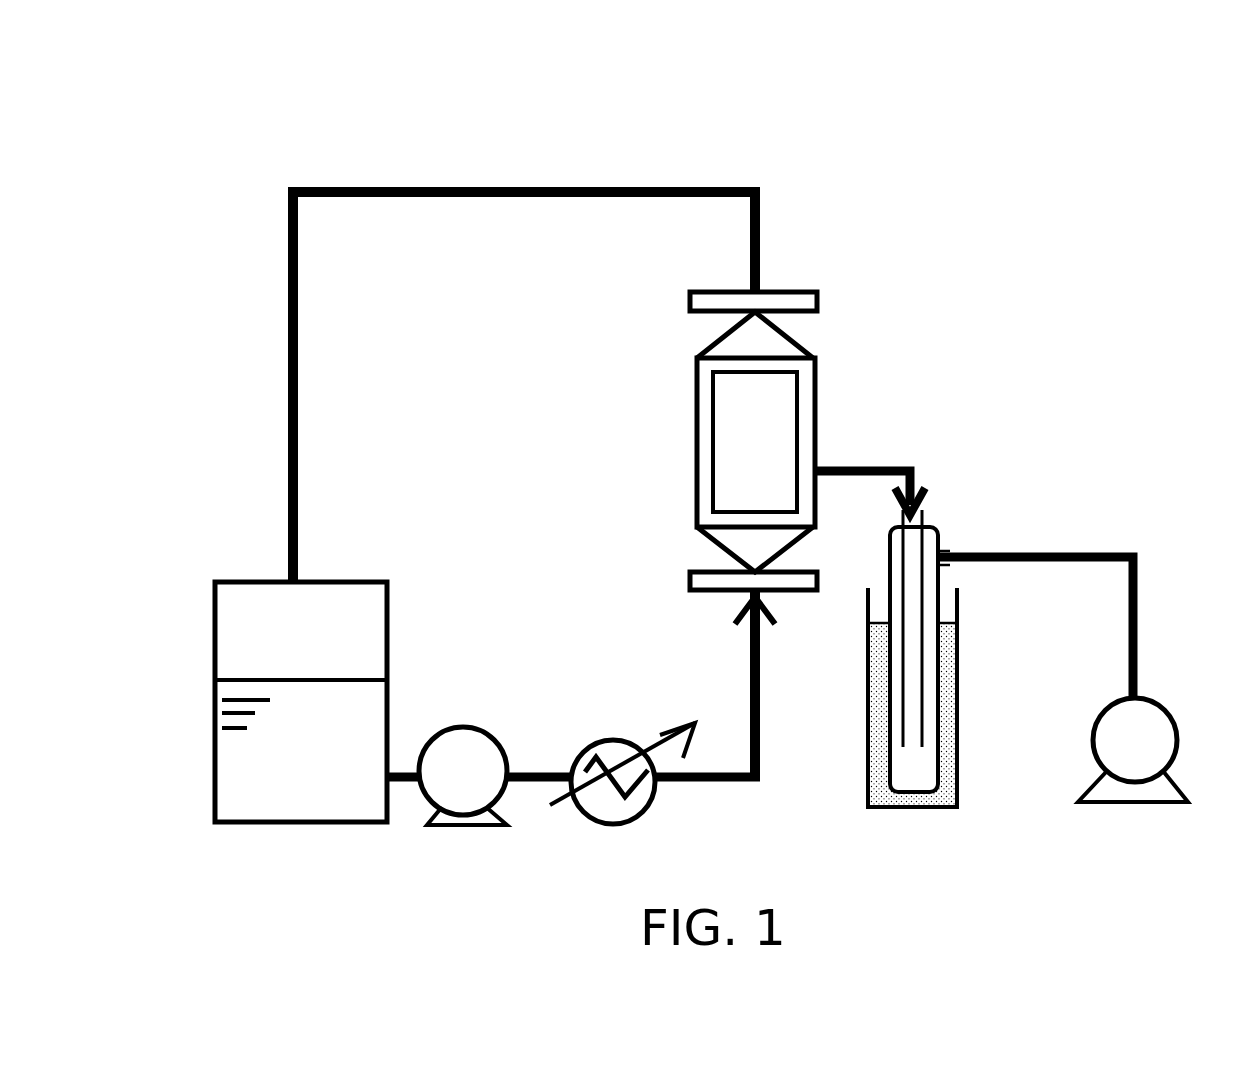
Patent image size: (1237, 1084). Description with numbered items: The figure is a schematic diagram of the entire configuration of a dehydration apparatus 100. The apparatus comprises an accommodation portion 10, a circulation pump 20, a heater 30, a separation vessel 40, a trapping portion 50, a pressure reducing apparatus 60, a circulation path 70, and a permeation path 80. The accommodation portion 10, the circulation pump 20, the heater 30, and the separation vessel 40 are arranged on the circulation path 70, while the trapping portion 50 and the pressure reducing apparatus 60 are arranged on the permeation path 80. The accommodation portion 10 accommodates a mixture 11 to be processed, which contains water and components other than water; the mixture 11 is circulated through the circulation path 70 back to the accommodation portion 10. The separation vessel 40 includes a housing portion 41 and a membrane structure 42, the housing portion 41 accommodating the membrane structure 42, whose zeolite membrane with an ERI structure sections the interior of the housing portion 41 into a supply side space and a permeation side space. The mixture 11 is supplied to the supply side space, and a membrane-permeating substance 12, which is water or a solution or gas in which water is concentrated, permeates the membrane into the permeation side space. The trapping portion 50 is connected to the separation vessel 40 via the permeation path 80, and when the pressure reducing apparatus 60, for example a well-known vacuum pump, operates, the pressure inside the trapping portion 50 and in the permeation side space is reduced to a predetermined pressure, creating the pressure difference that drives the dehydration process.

The dehydration apparatus 100 is at (965, 83).
The accommodation portion 10 is at (334, 665).
The mixture 11 is at (332, 763).
The membrane-permeating substance 12 is at (870, 467).
The circulation pump 20 is at (455, 727).
The heater 30 is at (613, 740).
The separation vessel 40 is at (683, 441).
The housing portion 41 is at (713, 453).
The membrane structure 42 is at (735, 490).
The trapping portion 50 is at (940, 537).
The pressure reducing apparatus 60 is at (1123, 700).
The circulation path 70 is at (297, 457).
The permeation path 80 is at (872, 419).